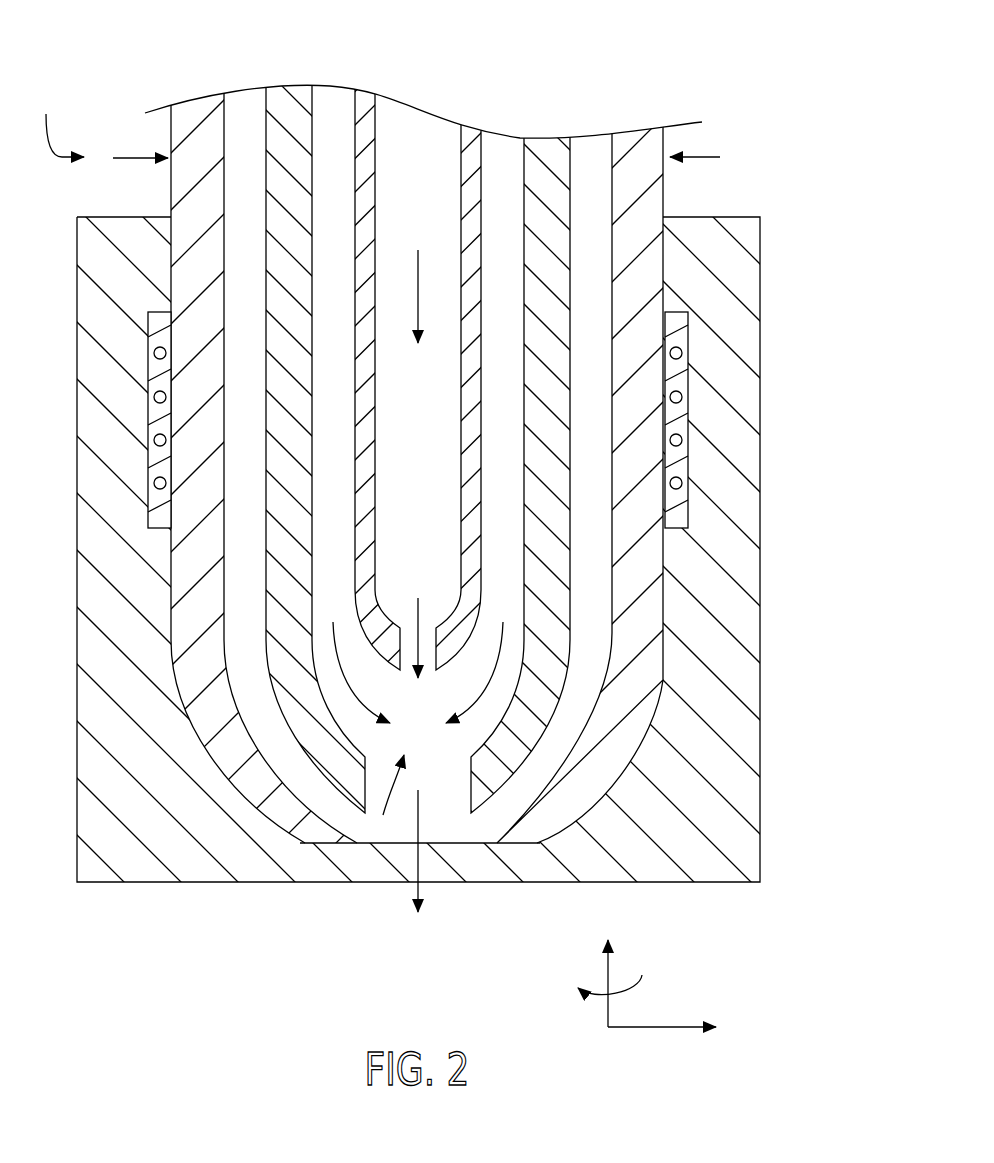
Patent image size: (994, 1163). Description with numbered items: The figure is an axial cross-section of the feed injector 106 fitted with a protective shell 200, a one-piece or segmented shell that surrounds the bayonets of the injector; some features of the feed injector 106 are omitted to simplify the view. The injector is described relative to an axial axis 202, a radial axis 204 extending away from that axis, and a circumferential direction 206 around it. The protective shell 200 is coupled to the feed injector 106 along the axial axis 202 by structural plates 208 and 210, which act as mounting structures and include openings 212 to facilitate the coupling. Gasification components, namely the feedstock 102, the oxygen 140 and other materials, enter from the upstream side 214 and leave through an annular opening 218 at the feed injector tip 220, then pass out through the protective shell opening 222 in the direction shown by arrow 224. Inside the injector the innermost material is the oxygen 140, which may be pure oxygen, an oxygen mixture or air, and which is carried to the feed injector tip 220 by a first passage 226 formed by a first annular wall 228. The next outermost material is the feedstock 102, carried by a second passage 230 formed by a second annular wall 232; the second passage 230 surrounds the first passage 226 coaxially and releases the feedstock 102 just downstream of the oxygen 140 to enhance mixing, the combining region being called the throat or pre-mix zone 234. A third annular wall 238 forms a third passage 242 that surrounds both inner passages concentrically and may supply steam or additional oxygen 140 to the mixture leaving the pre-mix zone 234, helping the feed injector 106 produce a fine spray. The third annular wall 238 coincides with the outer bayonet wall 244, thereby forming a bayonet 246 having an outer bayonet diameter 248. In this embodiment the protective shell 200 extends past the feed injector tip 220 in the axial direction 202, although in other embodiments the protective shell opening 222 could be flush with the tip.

The feedstock 102 is at (465, 688).
The feed injector 106 is at (114, 72).
The oxygen 140 is at (417, 270).
The protective shell 200 is at (760, 302).
The axial axis 202 is at (615, 957).
The radial axis 204 is at (660, 1032).
The circumferential direction 206 is at (598, 1027).
The structural plate 208 is at (153, 441).
The structural plate 210 is at (688, 414).
The openings 212 is at (153, 397).
The upstream side 214 is at (54, 123).
The annular opening 218 is at (394, 857).
The feed injector tip 220 is at (497, 838).
The protective shell opening 222 is at (478, 860).
The arrow 224 is at (423, 822).
The first passage 226 is at (438, 86).
The first annular wall 228 is at (362, 82).
The second passage 230 is at (333, 112).
The second annular wall 232 is at (263, 86).
The pre-mix zone 234 is at (381, 800).
The third annular wall 238 is at (172, 102).
The third passage 242 is at (589, 160).
The outer bayonet wall 244 is at (170, 140).
The bayonet 246 is at (681, 195).
The outer bayonet diameter 248 is at (138, 160).